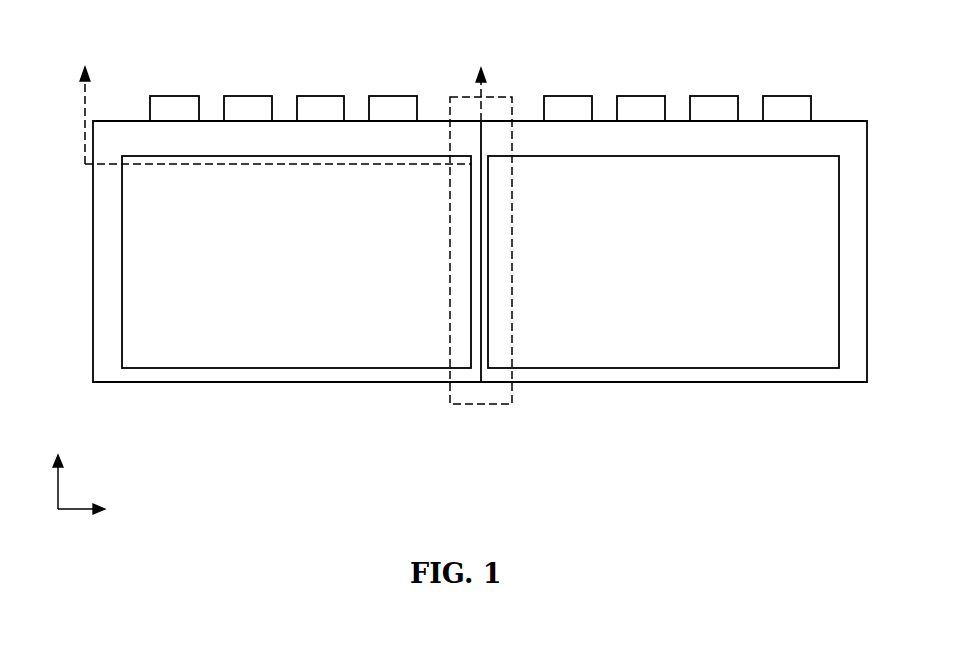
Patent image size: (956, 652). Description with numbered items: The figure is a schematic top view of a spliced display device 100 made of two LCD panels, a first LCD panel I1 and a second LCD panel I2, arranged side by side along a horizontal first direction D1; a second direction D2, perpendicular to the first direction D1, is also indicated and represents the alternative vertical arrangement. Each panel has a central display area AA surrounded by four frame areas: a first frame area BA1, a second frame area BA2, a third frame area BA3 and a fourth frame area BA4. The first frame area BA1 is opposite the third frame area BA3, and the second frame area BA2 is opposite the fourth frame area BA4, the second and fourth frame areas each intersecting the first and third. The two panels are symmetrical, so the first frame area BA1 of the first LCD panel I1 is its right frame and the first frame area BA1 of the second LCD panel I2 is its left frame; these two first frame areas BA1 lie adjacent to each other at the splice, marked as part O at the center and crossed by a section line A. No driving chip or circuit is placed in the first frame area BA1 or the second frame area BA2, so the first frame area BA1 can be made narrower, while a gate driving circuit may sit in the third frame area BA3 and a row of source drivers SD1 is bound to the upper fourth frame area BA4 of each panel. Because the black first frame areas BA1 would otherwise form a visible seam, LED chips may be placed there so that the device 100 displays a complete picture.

The spliced display device 100 is at (474, 233).
The first LCD panel I1 is at (138, 252).
The second LCD panel I2 is at (808, 233).
The display area AA is at (142, 286).
The first frame area BA1 is at (472, 362).
The second frame area BA2 is at (203, 373).
The third frame area BA3 is at (107, 328).
The fourth frame area BA4 is at (146, 145).
The source driver SD1 is at (340, 115).
The part O is at (486, 406).
The section line A- A is at (187, 44).
The first direction D1 is at (93, 510).
The second direction D2 is at (59, 472).